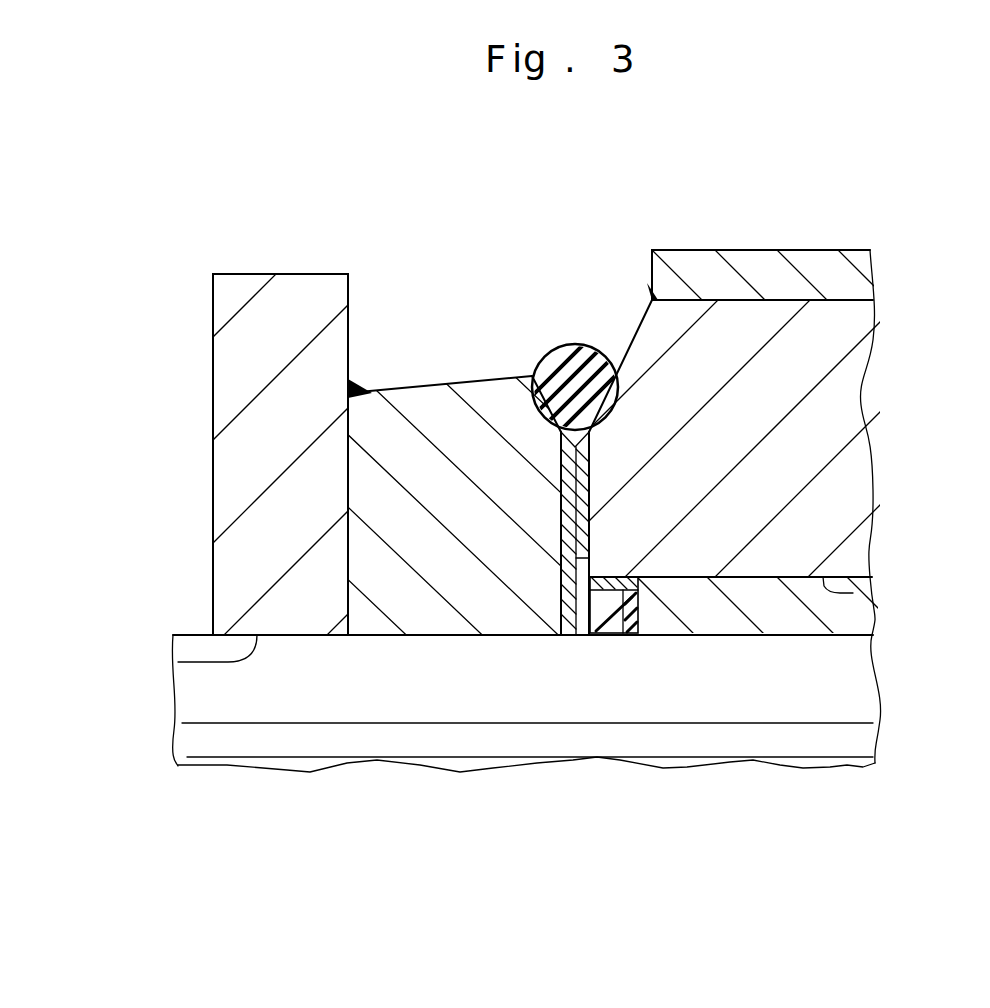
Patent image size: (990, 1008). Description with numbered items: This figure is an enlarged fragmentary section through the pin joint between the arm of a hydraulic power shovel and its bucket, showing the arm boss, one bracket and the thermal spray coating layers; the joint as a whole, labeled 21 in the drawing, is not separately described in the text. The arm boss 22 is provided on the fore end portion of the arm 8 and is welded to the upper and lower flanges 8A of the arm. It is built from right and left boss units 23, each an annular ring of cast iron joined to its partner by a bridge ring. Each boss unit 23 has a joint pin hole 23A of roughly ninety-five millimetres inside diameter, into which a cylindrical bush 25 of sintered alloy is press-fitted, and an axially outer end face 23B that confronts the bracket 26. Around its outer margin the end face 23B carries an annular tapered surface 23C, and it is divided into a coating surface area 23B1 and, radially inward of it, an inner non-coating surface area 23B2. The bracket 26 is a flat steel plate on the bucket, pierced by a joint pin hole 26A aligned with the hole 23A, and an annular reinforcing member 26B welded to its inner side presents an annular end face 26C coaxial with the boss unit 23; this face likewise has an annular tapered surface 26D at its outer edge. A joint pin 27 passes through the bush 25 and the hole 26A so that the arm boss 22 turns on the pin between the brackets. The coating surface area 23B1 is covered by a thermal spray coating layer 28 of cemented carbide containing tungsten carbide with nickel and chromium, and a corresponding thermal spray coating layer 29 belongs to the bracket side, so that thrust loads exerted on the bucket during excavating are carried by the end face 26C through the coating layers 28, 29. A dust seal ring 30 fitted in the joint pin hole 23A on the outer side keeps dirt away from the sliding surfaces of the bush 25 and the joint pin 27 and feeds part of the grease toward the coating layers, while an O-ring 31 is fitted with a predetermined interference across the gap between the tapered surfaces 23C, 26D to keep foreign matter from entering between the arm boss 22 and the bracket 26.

The sealing structure 21 is at (916, 246).
The arm 8 is at (759, 238).
The upper and lower flanges 8A is at (692, 268).
The arm boss 22 is at (831, 292).
The boss unit 23 is at (837, 443).
The joint pin hole 23A is at (875, 588).
The end face 23B is at (578, 447).
The coating surface area 23B1 is at (590, 497).
The inner non-coating surface area 23B2 is at (582, 530).
The annular tapered surface 23C is at (622, 368).
The bush 25 is at (853, 614).
The bracket 26 is at (283, 297).
The joint pin hole 26A is at (248, 649).
The annular reinforcing member 26B is at (416, 445).
The end face 26C is at (560, 530).
The annular tapered surface 26D is at (553, 412).
The joint pin 27 is at (293, 712).
The thermal spray coating layer 28 is at (590, 523).
The thermal spray coating layer 29 is at (566, 570).
The dust seal ring 30 is at (612, 612).
The O-ring 31 is at (535, 372).